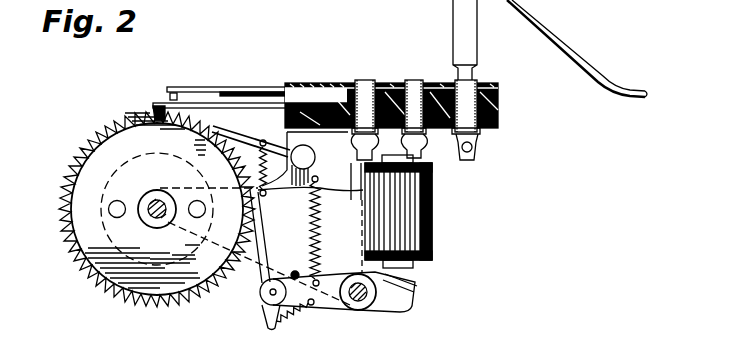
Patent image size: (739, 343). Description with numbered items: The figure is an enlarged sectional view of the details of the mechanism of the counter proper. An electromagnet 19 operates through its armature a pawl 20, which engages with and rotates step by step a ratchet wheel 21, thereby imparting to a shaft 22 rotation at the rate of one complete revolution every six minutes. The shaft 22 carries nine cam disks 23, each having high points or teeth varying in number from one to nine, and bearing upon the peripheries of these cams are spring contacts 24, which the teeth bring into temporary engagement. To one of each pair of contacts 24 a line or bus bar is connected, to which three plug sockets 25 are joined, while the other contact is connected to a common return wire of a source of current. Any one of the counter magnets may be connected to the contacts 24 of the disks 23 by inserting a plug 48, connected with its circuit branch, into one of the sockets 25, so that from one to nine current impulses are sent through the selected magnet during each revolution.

The electromagnet 19 is at (435, 212).
The pawl 20 is at (272, 243).
The ratchet wheel 21 is at (178, 298).
The shaft 22 is at (150, 213).
The cam disk 23 is at (125, 272).
The spring contact 24 is at (193, 98).
The plug socket 25 is at (398, 82).
The plug 48 is at (478, 72).